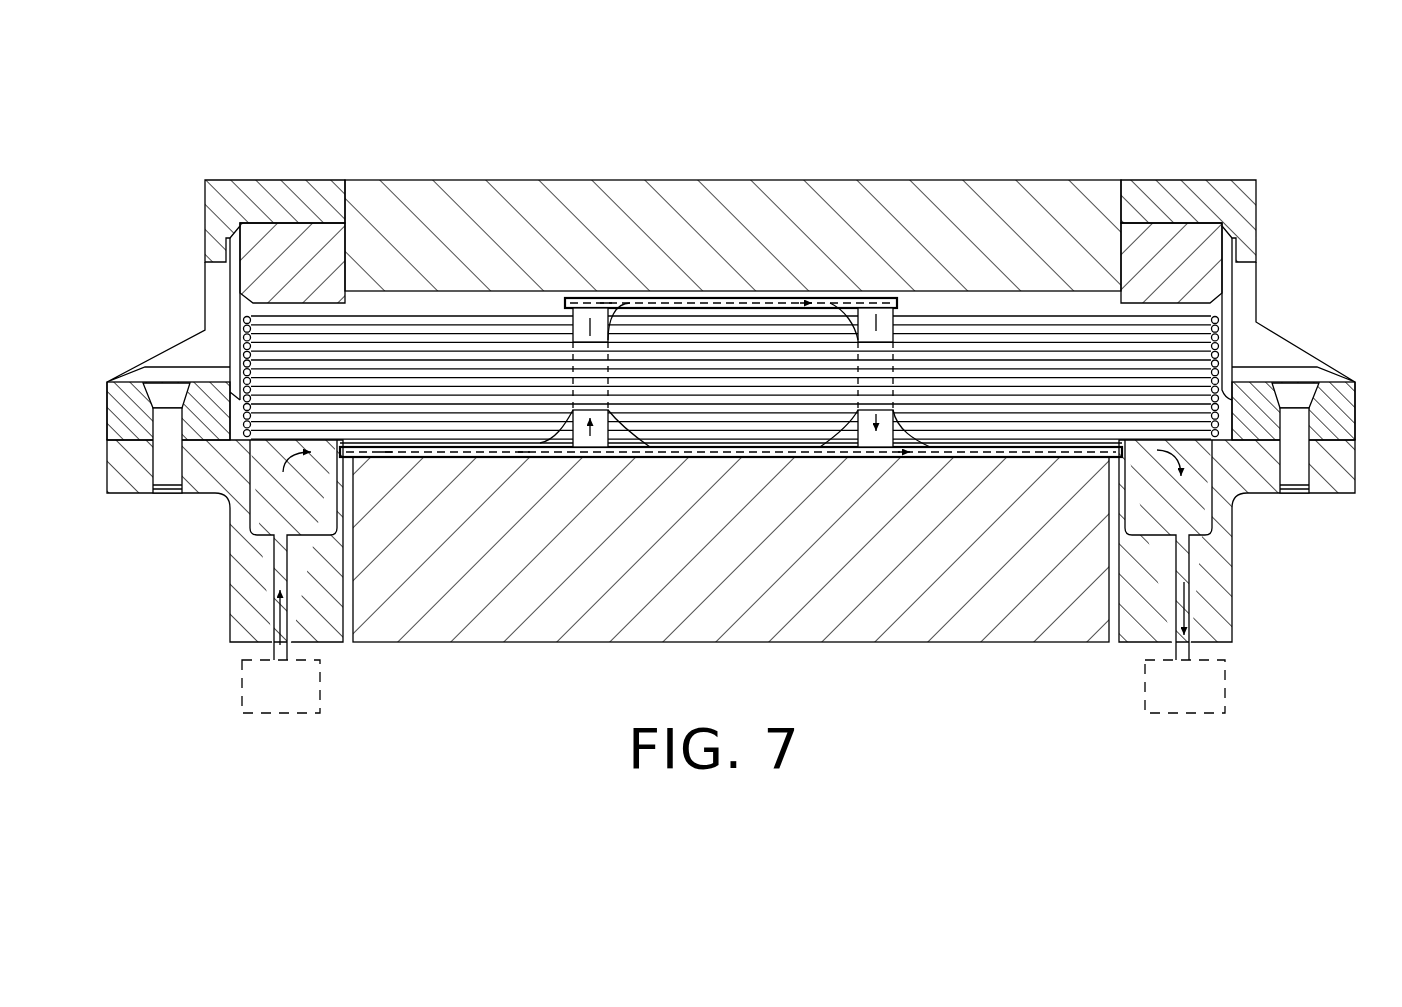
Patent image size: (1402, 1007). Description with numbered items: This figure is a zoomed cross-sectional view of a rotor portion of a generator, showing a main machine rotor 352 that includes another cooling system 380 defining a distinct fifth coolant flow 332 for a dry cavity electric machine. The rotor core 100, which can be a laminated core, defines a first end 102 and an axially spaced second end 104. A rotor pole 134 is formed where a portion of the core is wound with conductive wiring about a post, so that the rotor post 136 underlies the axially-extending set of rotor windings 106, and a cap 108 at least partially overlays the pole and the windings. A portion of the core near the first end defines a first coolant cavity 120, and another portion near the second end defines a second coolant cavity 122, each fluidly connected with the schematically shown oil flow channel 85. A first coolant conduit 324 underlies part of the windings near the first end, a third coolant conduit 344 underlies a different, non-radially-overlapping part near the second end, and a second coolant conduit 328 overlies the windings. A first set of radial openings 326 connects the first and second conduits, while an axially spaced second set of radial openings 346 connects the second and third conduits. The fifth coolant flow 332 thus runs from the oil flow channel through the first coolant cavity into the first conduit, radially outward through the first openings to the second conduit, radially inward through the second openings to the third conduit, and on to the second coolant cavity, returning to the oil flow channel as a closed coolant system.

The oil flow channel 85 is at (299, 697).
The rotor core 100 is at (653, 612).
The first end 102 is at (164, 508).
The second end 104 is at (1297, 500).
The set of rotor windings 106 is at (262, 346).
The cap 108 is at (455, 190).
The first coolant cavity 120 is at (272, 497).
The second coolant cavity 122 is at (1190, 497).
The rotor pole 134 is at (892, 167).
The rotor post 136 is at (385, 350).
The first coolant conduit 324 is at (455, 466).
The first set of radial openings 326 is at (611, 384).
The second coolant conduit 328 is at (742, 293).
The fifth coolant flow 332 is at (573, 337).
The third coolant conduit 344 is at (851, 380).
The second set of radial openings 346 is at (803, 453).
The main machine rotor 352 is at (777, 104).
The cooling system 380 is at (1241, 597).